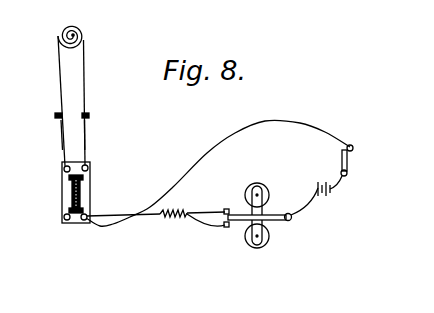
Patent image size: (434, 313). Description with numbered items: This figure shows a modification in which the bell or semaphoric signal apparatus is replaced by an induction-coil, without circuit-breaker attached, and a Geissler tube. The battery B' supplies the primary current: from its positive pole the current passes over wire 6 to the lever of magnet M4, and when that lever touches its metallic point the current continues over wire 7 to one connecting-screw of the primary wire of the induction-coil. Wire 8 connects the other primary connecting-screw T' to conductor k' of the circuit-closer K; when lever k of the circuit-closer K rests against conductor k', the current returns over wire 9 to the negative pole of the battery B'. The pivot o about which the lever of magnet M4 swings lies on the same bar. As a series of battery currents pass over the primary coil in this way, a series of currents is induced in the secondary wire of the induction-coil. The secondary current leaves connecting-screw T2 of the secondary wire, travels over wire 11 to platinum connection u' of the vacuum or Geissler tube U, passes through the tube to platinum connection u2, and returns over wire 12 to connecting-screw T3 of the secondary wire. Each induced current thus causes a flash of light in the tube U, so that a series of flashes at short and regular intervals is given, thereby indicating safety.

The vacuum or Geissler tube U is at (82, 88).
The platinum connection u2 is at (52, 102).
The platinum connection u' is at (92, 111).
The wire 12 is at (56, 135).
The wire 11 is at (91, 135).
The connecting-screw of the secondary wire T3 is at (63, 170).
The connecting-screw of the secondary wire T2 is at (89, 168).
The connecting-screw of the primary wire T' is at (74, 215).
The wire 7 is at (186, 222).
The wire 8 is at (218, 173).
The magnet M4 is at (265, 207).
The pivot o is at (289, 224).
The wire 6 is at (304, 203).
The battery B' is at (326, 199).
The wire 9 is at (336, 186).
The lever of circuit-closer k is at (338, 167).
The circuit-closer K is at (354, 160).
The conductor k' is at (355, 143).